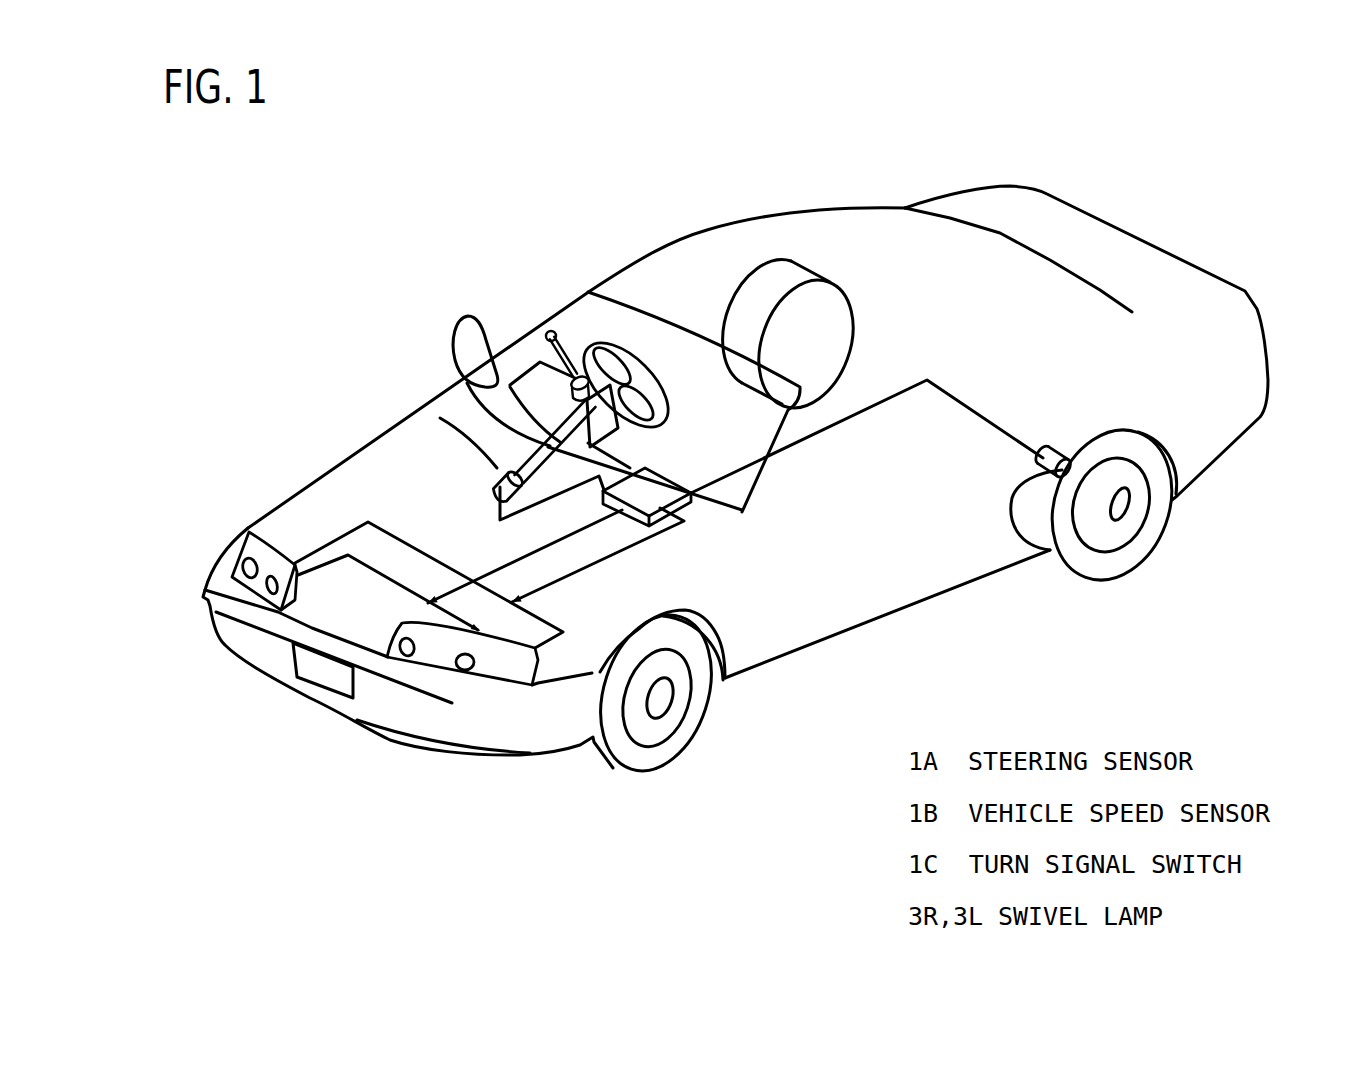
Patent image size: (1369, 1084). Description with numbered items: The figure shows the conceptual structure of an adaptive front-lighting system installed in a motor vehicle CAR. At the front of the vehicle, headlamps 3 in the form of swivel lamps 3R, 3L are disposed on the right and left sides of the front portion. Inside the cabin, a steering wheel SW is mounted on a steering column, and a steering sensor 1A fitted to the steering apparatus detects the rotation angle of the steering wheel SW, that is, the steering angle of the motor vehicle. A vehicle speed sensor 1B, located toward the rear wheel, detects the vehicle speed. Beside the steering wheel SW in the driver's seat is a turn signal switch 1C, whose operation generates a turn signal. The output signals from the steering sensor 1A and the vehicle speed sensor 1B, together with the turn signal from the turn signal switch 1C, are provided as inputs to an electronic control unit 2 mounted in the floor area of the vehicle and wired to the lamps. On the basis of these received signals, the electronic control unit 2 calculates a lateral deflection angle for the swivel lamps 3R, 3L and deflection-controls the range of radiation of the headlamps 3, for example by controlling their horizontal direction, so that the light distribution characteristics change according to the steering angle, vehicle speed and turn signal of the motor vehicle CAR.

The motor vehicle CAR is at (1049, 192).
The steering wheel SW is at (618, 352).
The steering sensor 1A is at (500, 482).
The vehicle speed sensor 1B is at (1020, 560).
The turn signal switch 1C is at (582, 383).
The electronic control unit 2 is at (673, 507).
The headlamps 3 is at (365, 742).
The right swivel lamp 3R is at (275, 553).
The left swivel lamp 3L is at (498, 670).